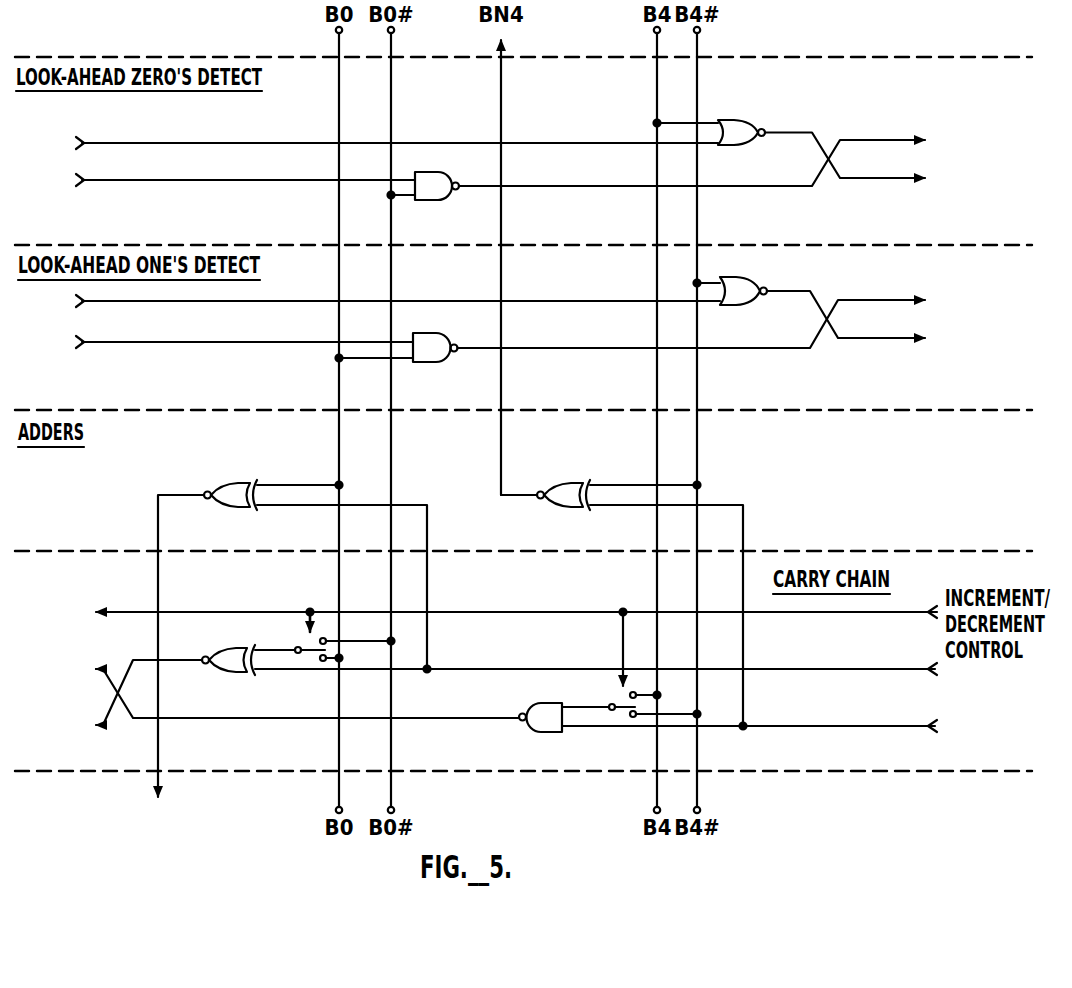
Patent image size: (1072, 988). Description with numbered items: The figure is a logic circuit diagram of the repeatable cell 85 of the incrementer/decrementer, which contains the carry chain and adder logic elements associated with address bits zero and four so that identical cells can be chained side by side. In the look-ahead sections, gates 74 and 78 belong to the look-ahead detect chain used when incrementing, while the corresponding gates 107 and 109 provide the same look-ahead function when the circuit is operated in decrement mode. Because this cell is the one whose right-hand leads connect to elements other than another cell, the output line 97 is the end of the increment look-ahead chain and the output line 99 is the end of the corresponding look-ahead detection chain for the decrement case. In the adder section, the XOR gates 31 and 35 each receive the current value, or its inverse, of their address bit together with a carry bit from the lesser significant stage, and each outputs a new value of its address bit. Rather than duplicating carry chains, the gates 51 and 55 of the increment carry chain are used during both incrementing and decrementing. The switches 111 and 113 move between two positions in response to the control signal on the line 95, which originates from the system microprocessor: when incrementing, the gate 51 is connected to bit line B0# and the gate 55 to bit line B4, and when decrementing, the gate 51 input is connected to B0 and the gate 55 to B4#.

The look-ahead gate for decrement mode 107 is at (737, 128).
The look-ahead gate for decrement mode 109 is at (432, 180).
The output line 99 is at (887, 140).
The look-ahead detect chain gate 74 is at (738, 285).
The look-ahead detect chain gate 78 is at (432, 340).
The output line 97 is at (886, 300).
The XOR gate 31 is at (228, 490).
The XOR gate 35 is at (558, 490).
The cell 85 is at (196, 840).
The control signal line 95 is at (900, 613).
The NOR gate 51 is at (232, 652).
The switch 111 is at (305, 648).
The NAND gate 55 is at (543, 710).
The switch 113 is at (615, 700).